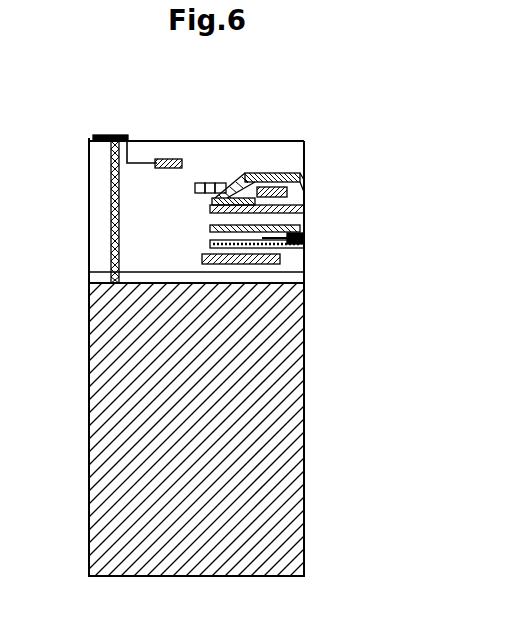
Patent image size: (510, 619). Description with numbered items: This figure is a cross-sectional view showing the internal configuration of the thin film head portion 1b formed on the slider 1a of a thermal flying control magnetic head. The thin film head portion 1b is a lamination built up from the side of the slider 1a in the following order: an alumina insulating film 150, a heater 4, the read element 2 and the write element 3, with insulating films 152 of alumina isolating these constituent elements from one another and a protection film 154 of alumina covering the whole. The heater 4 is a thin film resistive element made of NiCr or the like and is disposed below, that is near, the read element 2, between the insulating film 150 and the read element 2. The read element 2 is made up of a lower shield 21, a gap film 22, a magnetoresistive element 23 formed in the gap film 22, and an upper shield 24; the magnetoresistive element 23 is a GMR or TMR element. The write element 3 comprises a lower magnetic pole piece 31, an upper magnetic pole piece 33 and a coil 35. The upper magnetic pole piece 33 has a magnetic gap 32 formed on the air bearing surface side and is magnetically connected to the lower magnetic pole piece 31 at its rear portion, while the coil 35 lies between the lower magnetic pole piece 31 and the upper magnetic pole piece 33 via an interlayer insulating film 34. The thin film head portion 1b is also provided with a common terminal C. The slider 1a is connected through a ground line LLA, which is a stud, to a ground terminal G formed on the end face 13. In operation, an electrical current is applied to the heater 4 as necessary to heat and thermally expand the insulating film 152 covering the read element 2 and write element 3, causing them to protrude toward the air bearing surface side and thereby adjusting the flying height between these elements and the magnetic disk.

The slider 1a is at (304, 410).
The thin film head portion 1b is at (303, 141).
The read element 2 is at (332, 244).
The lower shield 21 is at (306, 248).
The gap film 22 is at (306, 244).
The magnetoresistive element 23 is at (306, 238).
The upper shield 24 is at (306, 228).
The write element 3 is at (314, 156).
The lower magnetic pole piece 31 is at (295, 199).
The magnetic gap 32 is at (306, 202).
The upper magnetic pole piece 33 is at (306, 192).
The interlayer insulating film 34 is at (306, 183).
The coil 35 is at (306, 176).
The heater 4 is at (304, 258).
The end face 13 is at (158, 141).
The alumina insulating film 150 is at (304, 278).
The insulating film 152 is at (188, 233).
The protection film 154 is at (267, 153).
The ground terminal G is at (110, 135).
The common terminal C is at (178, 159).
The ground line LLA is at (110, 175).